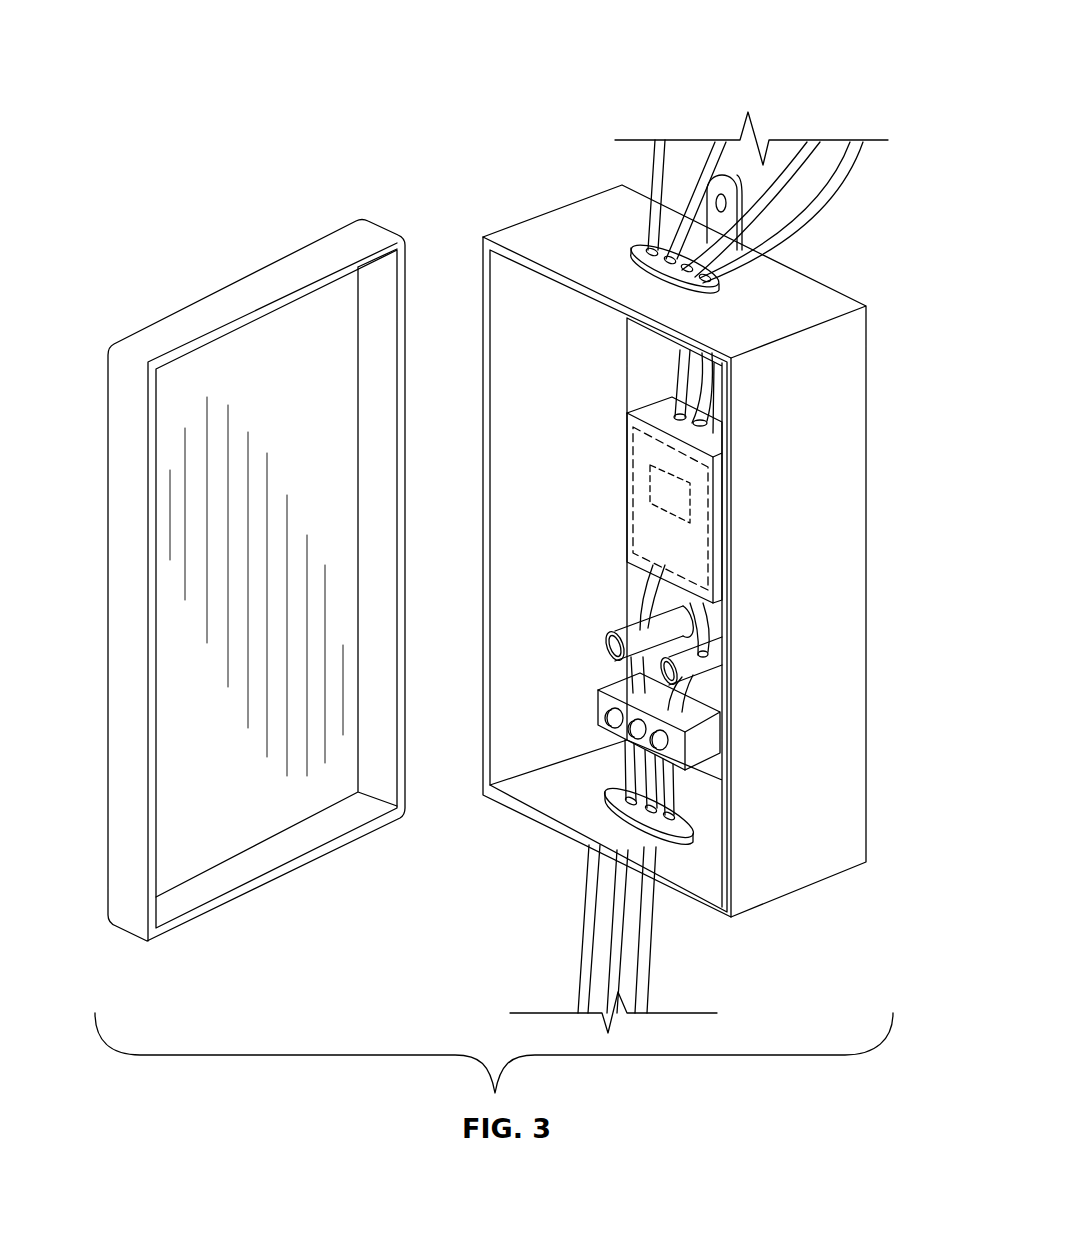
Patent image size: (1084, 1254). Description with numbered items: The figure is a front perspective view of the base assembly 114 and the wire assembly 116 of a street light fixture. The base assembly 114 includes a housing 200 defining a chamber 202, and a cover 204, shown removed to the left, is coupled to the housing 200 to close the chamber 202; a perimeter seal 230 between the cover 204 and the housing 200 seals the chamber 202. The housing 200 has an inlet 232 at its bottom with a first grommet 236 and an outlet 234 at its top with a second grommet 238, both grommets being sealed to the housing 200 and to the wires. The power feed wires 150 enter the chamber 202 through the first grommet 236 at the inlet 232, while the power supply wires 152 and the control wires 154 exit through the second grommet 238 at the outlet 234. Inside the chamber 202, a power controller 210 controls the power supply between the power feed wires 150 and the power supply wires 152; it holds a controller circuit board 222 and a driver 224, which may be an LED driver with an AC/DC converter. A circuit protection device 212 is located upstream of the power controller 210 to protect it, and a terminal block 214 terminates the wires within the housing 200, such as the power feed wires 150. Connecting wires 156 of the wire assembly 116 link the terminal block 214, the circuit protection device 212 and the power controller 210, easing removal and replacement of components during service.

The base assembly 114 is at (542, 142).
The wire assembly 116 is at (852, 189).
The power feed wires 150 is at (652, 986).
The power supply wires 152 is at (717, 158).
The control wires 154 is at (820, 151).
The connecting wires 156 is at (708, 623).
The housing 200 is at (830, 380).
The chamber 202 is at (558, 788).
The cover 204 is at (125, 607).
The power controller 210 is at (700, 516).
The circuit protection device 212 is at (712, 647).
The terminal block 214 is at (675, 742).
The controller circuit board 222 is at (700, 568).
The driver 224 is at (710, 477).
The perimeter seal 230 is at (151, 765).
The inlet 232 is at (630, 827).
The outlet 234 is at (725, 282).
The first grommet 236 is at (607, 808).
The second grommet 238 is at (720, 297).